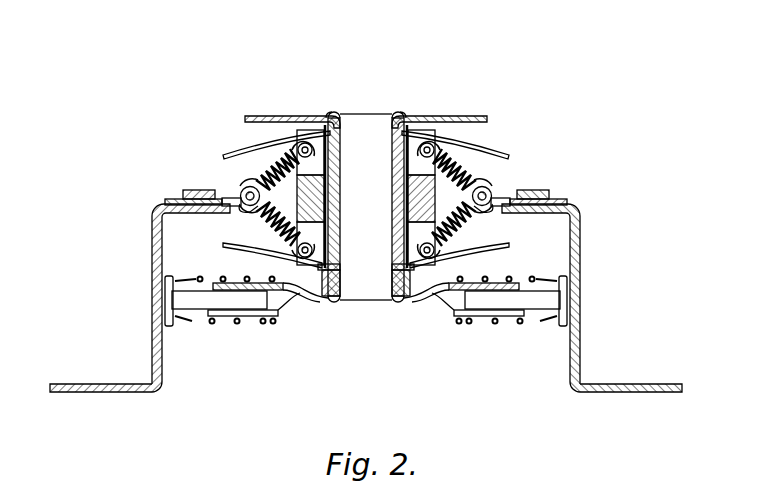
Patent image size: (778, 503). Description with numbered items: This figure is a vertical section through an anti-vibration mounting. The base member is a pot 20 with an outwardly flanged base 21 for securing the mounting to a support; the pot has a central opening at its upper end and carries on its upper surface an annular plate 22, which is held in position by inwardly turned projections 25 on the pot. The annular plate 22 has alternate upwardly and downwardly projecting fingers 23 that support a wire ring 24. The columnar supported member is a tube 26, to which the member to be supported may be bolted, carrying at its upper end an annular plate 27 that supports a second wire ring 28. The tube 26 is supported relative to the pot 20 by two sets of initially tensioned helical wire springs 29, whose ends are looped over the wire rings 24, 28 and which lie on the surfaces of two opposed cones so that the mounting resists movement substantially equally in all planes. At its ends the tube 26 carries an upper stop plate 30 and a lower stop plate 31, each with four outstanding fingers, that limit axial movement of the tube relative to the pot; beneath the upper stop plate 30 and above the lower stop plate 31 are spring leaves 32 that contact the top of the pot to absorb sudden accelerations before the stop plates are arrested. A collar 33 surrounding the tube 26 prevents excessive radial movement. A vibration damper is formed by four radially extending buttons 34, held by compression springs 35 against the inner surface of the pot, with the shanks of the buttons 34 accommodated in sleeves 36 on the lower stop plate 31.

The pot 20 is at (152, 322).
The outwardly flanged base 21 is at (70, 383).
The annular plate 22 is at (175, 201).
The fingers 23 is at (505, 186).
The wire ring 24 is at (230, 209).
The inwardly turned projections 25 is at (192, 192).
The tube 26 is at (351, 112).
The annular plate 27 is at (396, 126).
The wire ring 28 is at (315, 123).
The helical wire springs 29 is at (262, 165).
The upper stop plate 30 is at (284, 116).
The lower stop plate 31 is at (313, 300).
The spring leaves 32 is at (240, 140).
The collar 33 is at (412, 193).
The buttons 34 is at (170, 325).
The compression springs 35 is at (237, 318).
The sleeves 36 is at (255, 313).